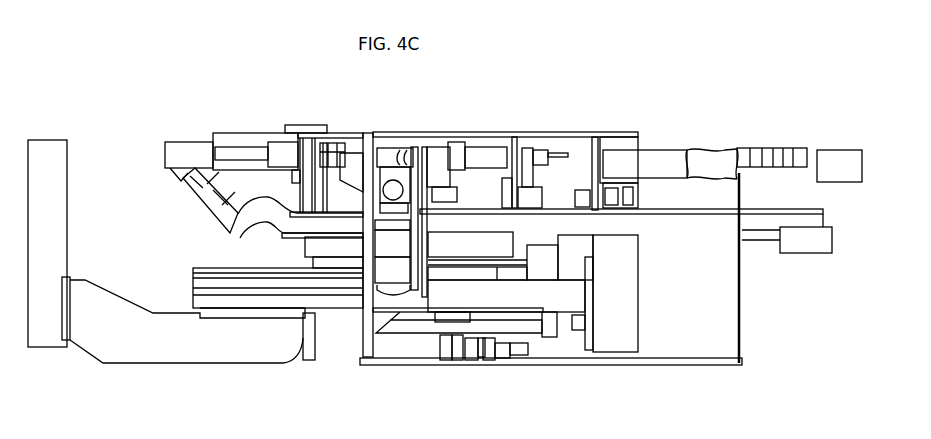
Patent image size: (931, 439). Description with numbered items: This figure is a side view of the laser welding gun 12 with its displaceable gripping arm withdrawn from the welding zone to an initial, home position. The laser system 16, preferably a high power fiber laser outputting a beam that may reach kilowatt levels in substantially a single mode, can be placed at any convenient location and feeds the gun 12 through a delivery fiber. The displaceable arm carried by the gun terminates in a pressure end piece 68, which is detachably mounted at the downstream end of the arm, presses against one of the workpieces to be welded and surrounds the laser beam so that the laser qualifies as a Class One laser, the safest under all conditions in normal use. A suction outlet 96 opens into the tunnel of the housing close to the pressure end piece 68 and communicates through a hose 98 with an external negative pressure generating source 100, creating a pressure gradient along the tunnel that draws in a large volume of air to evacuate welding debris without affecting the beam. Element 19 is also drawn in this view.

The gun 12 is at (202, 67).
The pressure end piece 68 is at (193, 142).
The suction outlet 96 is at (190, 177).
The hose 98 is at (242, 233).
The cable connector 19 is at (785, 148).
The laser system 16 is at (829, 175).
The external negative pressure generating source 100 is at (790, 250).